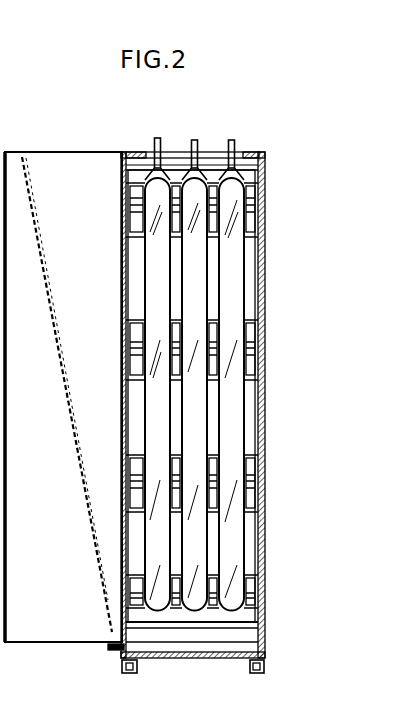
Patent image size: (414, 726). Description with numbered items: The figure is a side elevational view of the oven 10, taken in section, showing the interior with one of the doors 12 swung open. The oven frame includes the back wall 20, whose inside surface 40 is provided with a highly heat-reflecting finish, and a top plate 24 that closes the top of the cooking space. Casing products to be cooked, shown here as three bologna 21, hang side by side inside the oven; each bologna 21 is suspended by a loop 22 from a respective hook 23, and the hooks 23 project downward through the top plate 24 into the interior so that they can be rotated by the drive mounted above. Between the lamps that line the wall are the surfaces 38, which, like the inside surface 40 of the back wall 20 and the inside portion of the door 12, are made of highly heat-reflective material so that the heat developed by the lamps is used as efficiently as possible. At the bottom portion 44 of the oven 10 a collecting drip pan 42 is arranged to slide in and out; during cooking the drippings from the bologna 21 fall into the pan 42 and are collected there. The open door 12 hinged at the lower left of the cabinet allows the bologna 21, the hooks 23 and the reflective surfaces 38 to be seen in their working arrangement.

The oven 10 is at (79, 72).
The door 12 is at (73, 271).
The back wall 20 is at (265, 428).
The bologna 21 is at (235, 280).
The loop 22 is at (262, 171).
The hook 23 is at (156, 138).
The top plate 24 is at (252, 152).
The surface between lamps 38 is at (137, 311).
The inside surface of back wall 40 is at (257, 314).
The collecting drip pan 42 is at (118, 652).
The bottom portion 44 is at (279, 650).